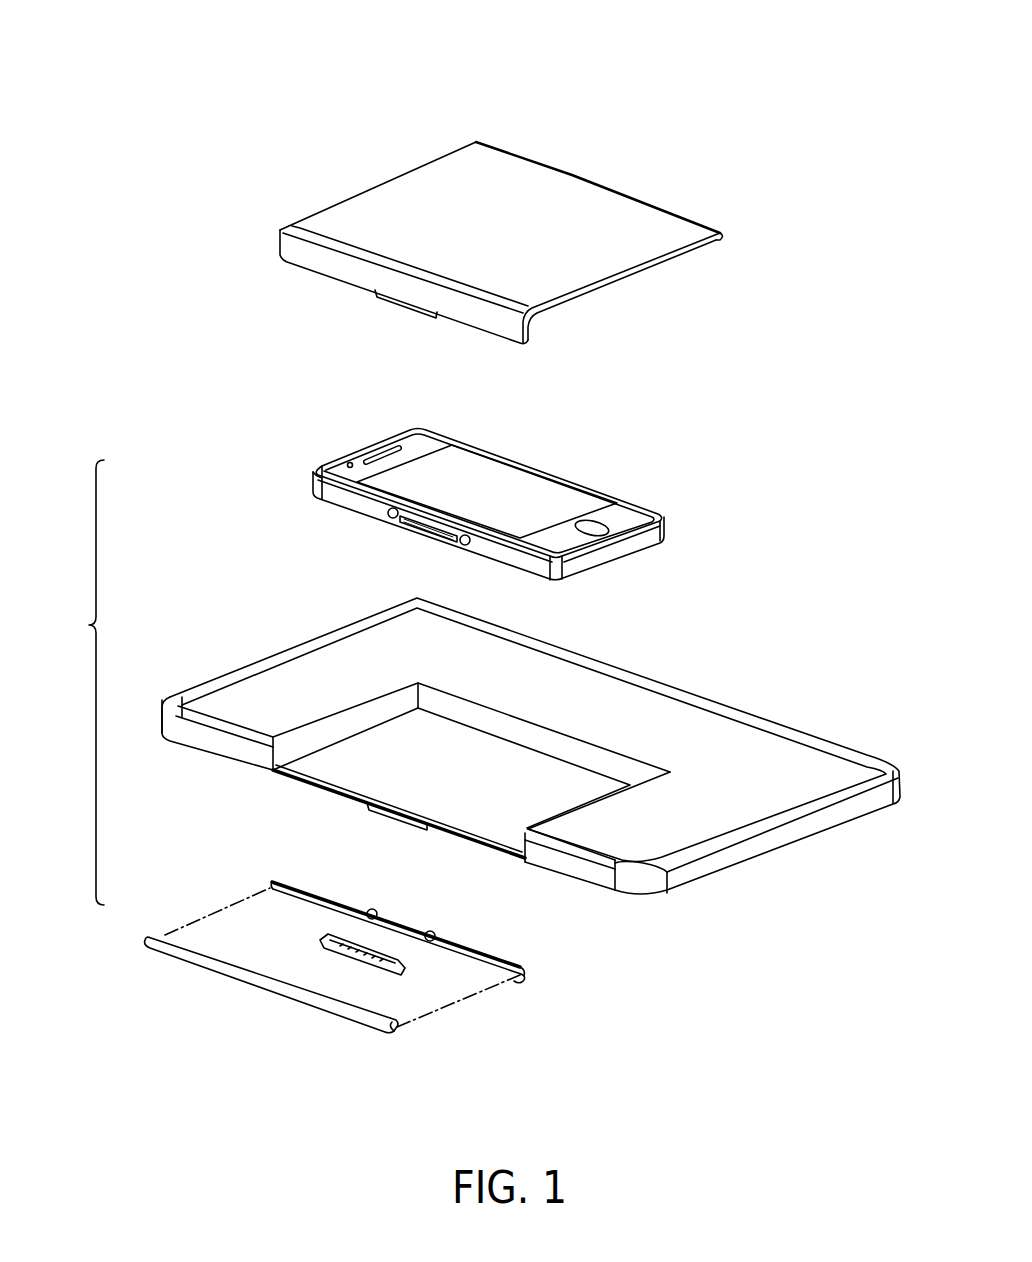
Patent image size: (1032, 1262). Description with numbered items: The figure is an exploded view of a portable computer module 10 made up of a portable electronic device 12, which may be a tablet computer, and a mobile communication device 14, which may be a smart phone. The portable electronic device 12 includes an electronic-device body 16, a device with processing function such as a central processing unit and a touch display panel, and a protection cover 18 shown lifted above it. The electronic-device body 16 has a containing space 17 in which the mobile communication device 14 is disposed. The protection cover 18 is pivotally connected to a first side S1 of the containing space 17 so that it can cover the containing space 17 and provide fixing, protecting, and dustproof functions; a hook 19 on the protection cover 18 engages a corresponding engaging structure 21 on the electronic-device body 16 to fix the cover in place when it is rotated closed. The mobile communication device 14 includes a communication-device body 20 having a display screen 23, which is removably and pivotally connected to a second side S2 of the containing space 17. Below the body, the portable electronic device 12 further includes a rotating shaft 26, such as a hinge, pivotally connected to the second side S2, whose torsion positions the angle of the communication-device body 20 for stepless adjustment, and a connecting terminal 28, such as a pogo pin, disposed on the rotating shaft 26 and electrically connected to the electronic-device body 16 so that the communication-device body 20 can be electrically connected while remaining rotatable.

The portable computer module 10 is at (733, 97).
The portable electronic device 12 is at (89, 625).
The mobile communication device 14 is at (545, 472).
The electronic-device body 16 is at (272, 678).
The containing space 17 is at (476, 765).
The protection cover 18 is at (407, 250).
The hook 19 is at (397, 308).
The communication-device body 20 is at (637, 513).
The engaging structure 21 is at (400, 830).
The display screen 23 is at (485, 485).
The rotating shaft 26 is at (152, 940).
The connecting terminal 28 is at (320, 937).
The first side S1 is at (588, 758).
The second side S2 is at (508, 847).